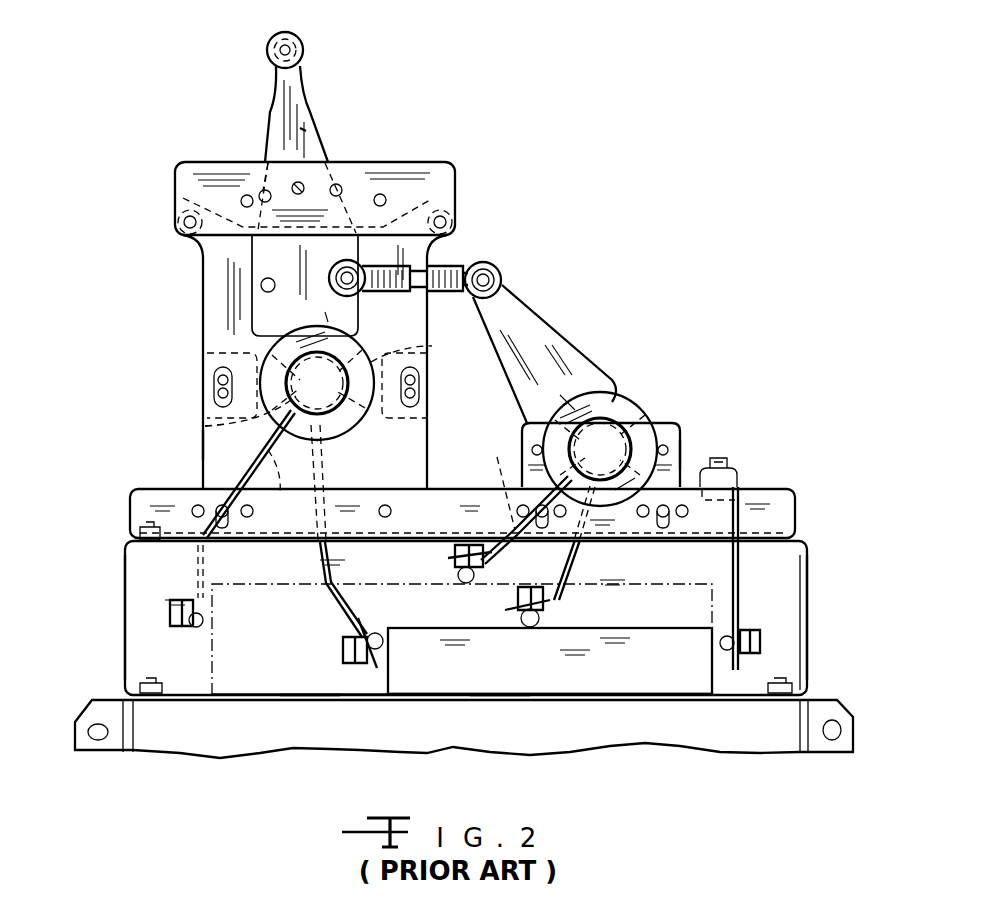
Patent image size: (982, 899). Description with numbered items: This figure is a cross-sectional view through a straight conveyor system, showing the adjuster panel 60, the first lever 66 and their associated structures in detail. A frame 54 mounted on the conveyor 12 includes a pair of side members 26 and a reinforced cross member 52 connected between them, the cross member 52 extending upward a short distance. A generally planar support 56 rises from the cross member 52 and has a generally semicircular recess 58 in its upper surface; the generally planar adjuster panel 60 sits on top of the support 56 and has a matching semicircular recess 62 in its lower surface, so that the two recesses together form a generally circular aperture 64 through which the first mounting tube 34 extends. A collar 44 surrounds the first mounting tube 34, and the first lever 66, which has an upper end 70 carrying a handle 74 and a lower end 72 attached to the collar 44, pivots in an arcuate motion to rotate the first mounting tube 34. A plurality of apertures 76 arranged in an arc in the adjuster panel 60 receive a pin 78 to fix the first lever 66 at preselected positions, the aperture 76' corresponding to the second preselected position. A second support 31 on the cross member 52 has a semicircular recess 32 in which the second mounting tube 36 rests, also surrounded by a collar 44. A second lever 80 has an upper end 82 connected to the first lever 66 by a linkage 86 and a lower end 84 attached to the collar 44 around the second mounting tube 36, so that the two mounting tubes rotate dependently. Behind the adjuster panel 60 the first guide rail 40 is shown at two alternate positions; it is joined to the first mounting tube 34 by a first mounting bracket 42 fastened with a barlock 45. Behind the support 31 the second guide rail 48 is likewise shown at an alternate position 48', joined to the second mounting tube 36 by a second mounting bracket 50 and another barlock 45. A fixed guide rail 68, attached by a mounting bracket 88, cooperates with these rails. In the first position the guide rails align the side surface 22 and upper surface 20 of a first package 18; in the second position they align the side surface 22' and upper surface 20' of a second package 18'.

The conveyor 12 is at (657, 702).
The package 18 is at (515, 741).
The second package 18' is at (320, 735).
The upper surface 20 is at (550, 661).
The upper surface 20' is at (462, 639).
The side surface 22 is at (546, 679).
The side surface 22' is at (300, 675).
The side members 26 is at (118, 600).
The second support 31 is at (697, 442).
The semicircular recess 32 is at (668, 425).
The first mounting tube 34 is at (302, 399).
The second mounting tube 36 is at (585, 465).
The first guide rail 40 is at (208, 620).
The first mounting bracket 42 is at (330, 476).
The collar 44 is at (358, 430).
The barlock 45 is at (445, 568).
The second guide rail 48 is at (559, 607).
The rod end connector 48' is at (464, 581).
The second mounting bracket 50 is at (612, 563).
The cross member 52 is at (448, 505).
The frame 54 is at (818, 617).
The support 56 is at (228, 446).
The semicircular recess 58 is at (207, 427).
The adjuster panel 60 is at (196, 302).
The semicircular recess 62 is at (274, 292).
The circular aperture 64 is at (432, 346).
The first lever 66 is at (306, 126).
The fixed guide rail 68 is at (725, 660).
The upper end 70 is at (296, 77).
The lower end 72 is at (328, 315).
The handle 74 is at (300, 38).
The apertures 76 is at (278, 156).
The aperture 76' is at (435, 166).
The pin 78 is at (274, 156).
The second lever 80 is at (548, 314).
The upper end 82 is at (505, 290).
The lower end 84 is at (595, 375).
The linkage 86 is at (438, 258).
The mounting bracket 88 is at (745, 570).